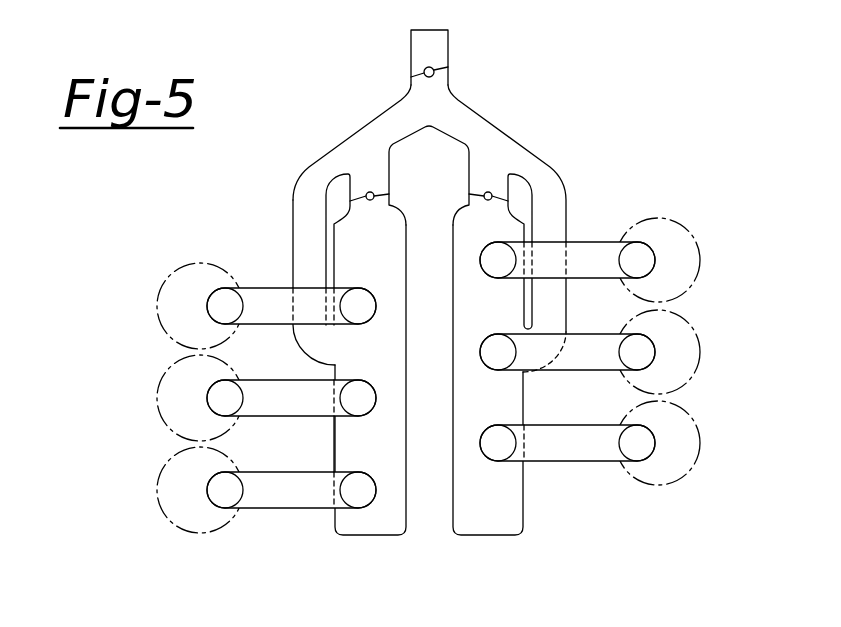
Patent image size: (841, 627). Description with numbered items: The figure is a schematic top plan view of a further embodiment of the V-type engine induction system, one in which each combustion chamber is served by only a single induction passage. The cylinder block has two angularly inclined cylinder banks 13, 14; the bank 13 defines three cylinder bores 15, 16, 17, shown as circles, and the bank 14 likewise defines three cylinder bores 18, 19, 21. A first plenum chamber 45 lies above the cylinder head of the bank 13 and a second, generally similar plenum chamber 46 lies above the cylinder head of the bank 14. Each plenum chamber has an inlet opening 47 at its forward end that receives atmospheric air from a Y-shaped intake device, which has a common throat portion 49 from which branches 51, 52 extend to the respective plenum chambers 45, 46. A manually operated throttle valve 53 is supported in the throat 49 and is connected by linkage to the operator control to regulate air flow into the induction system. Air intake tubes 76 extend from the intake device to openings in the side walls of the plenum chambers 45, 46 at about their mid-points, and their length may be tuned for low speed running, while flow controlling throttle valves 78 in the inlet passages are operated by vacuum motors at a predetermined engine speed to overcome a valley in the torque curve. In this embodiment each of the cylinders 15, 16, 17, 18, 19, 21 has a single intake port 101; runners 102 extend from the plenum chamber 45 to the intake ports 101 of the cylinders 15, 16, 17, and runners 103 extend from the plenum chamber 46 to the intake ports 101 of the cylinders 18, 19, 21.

The cylinder bank 13 is at (176, 548).
The cylinder bank 14 is at (638, 494).
The cylinder bore 15 is at (160, 507).
The cylinder bore 16 is at (157, 410).
The cylinder bore 17 is at (165, 280).
The cylinder bore 18 is at (688, 480).
The cylinder bore 19 is at (700, 377).
The cylinder bore 21 is at (700, 280).
The first plenum chamber 45 is at (375, 551).
The second plenum chamber 46 is at (489, 522).
The inlet opening 47 is at (487, 182).
The common throat portion 49 is at (368, 127).
The branch 51 is at (313, 191).
The branch 52 is at (480, 123).
The manually operated throttle valve 53 is at (448, 67).
The air intake tube 76 is at (543, 183).
The flow controlling throttle valve 78 is at (481, 198).
The intake port 101 is at (651, 450).
The runner 102 is at (317, 418).
The runner 103 is at (567, 357).